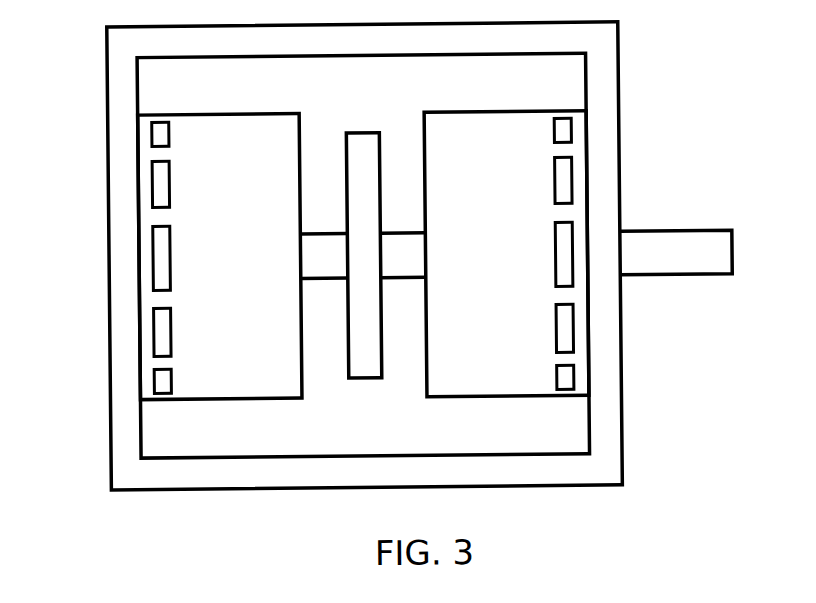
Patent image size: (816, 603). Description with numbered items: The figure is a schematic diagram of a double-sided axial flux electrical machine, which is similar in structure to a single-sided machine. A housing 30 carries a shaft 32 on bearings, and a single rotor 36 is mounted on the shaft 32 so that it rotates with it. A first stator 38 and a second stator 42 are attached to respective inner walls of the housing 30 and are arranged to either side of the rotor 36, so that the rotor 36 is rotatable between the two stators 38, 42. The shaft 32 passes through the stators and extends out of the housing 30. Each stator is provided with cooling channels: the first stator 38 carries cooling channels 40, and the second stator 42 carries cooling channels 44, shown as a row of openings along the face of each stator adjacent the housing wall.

The housing 30 is at (112, 49).
The shaft 32 is at (713, 244).
The rotor 36 is at (370, 372).
The first stator 38 is at (512, 391).
The cooling channels 40 is at (570, 188).
The second stator 42 is at (245, 390).
The cooling channels 44 is at (151, 182).